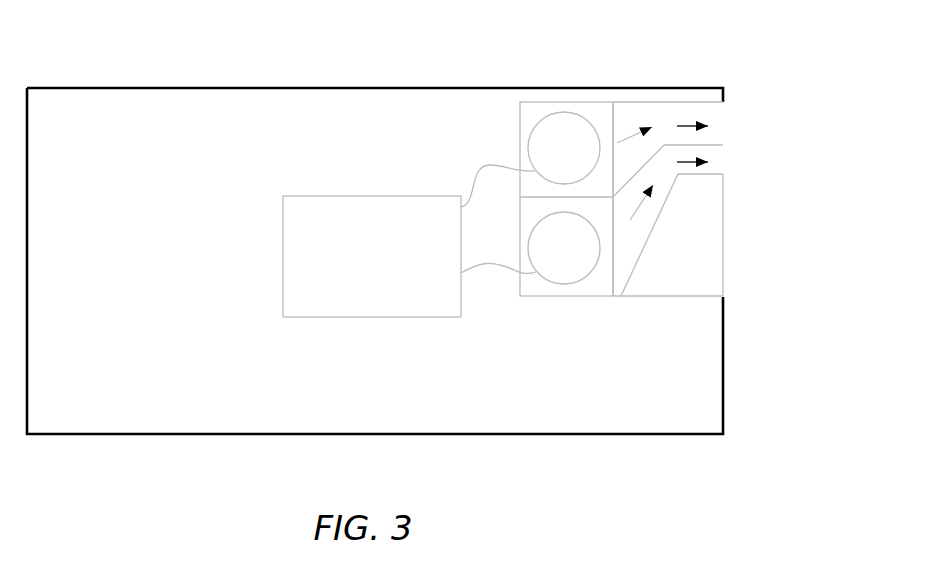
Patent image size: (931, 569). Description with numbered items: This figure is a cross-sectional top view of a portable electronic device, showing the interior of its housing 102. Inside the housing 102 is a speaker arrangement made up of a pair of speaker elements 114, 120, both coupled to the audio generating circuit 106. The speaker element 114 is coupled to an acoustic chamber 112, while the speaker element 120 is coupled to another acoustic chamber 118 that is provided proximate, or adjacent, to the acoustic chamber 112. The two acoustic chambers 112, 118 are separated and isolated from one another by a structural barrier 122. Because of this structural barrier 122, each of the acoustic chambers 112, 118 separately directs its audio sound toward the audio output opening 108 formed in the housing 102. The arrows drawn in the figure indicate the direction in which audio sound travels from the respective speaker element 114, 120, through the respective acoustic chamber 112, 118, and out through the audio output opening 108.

The housing 102 is at (198, 87).
The audio generating circuit 106 is at (372, 256).
The audio output opening 108 is at (740, 145).
The acoustic chamber 112 is at (618, 118).
The speaker element 114 is at (531, 140).
The acoustic chamber 118 is at (623, 292).
The speaker element 120 is at (546, 285).
The structural barrier 122 is at (537, 202).